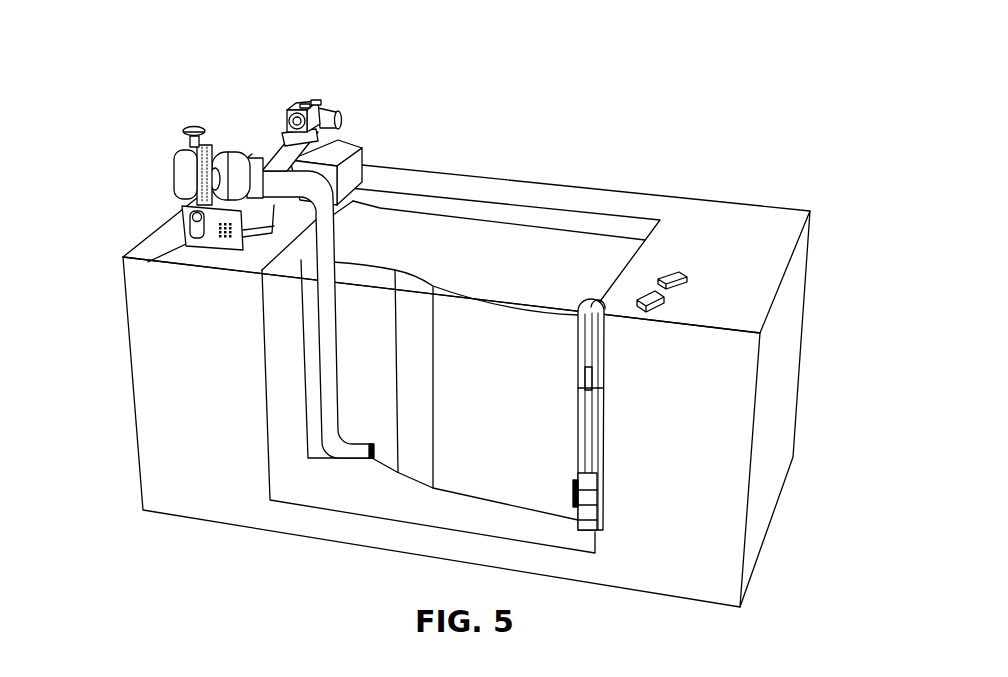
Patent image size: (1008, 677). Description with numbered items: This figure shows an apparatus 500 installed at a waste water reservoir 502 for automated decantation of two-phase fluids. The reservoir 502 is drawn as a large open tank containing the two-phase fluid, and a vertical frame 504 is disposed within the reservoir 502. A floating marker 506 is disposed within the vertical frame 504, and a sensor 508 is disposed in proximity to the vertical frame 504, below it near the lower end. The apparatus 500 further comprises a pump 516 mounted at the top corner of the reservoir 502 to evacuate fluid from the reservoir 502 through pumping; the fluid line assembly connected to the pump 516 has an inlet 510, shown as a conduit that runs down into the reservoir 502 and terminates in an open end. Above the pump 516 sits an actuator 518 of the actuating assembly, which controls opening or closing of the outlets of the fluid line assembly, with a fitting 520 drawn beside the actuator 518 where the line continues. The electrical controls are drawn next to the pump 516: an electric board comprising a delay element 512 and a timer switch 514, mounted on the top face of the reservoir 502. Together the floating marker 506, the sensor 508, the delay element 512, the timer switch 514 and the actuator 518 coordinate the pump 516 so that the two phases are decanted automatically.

The apparatus 500 is at (465, 319).
The waste water reservoir 502 is at (597, 198).
The vertical frame 504 is at (606, 349).
The floating marker 506 is at (337, 340).
The sensor 508 is at (590, 488).
The inlet 510 is at (372, 460).
The delay element 512 is at (148, 262).
The timer switch 514 is at (187, 232).
The pump 516 is at (180, 170).
The actuator 518 is at (319, 101).
The fitting 520 is at (333, 113).